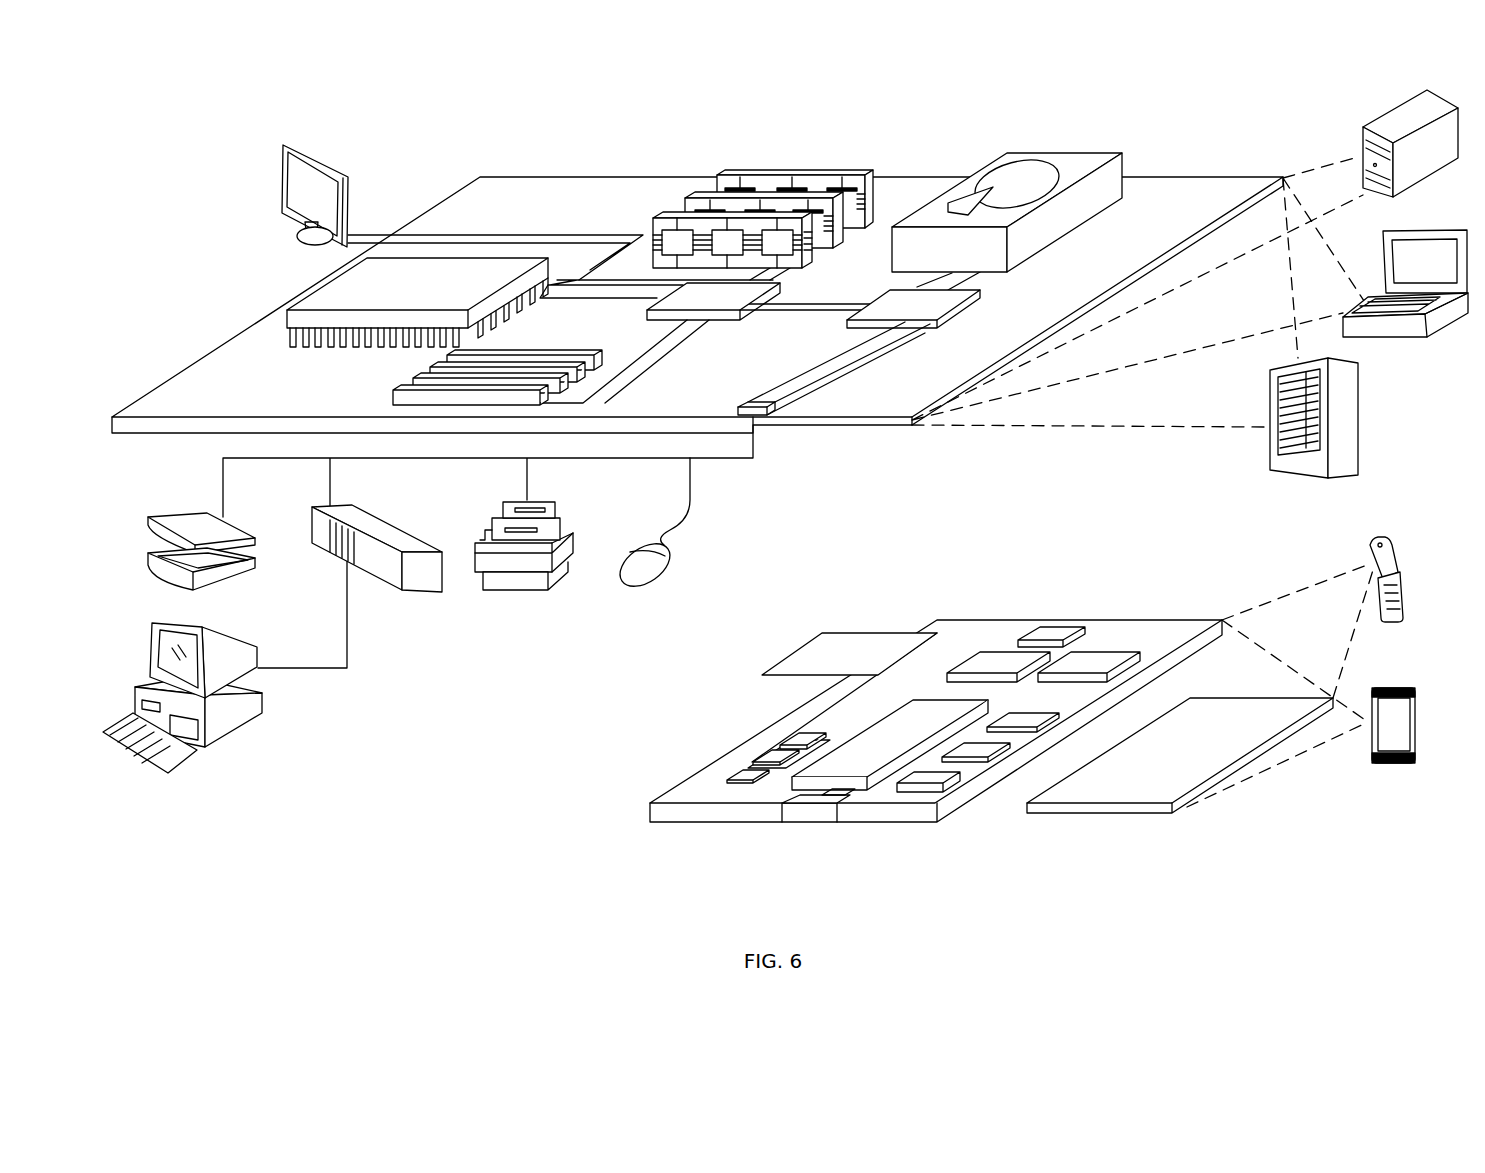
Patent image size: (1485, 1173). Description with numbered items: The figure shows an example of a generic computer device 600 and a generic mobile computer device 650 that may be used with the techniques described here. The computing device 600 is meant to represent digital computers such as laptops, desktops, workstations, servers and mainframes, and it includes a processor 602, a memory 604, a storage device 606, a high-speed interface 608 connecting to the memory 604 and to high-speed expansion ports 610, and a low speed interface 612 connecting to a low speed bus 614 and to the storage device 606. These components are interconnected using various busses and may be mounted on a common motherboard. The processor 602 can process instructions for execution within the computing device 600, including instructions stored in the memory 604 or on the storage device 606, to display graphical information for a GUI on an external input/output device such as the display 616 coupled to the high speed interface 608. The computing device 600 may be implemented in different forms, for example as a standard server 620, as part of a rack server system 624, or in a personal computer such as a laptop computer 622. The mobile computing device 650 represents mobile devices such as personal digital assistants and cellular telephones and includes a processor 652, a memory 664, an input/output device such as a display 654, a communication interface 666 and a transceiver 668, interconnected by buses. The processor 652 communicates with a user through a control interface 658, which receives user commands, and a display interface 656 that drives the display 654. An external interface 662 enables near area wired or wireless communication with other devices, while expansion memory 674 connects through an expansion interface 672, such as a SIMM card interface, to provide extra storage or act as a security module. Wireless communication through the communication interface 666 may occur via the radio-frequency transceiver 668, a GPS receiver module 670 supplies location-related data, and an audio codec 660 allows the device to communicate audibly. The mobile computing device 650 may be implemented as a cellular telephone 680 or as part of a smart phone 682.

The computing device 600 is at (430, 124).
The processor 602 is at (310, 290).
The memory 604 is at (797, 167).
The storage device 606 is at (1048, 148).
The high-speed interface 608 is at (727, 293).
The high-speed expansion ports 610 is at (418, 373).
The low speed interface 612 is at (883, 300).
The low speed bus 614 is at (758, 397).
The display 616 is at (287, 142).
The standard server 620 is at (1385, 118).
The laptop computer 622 is at (1445, 227).
The rack server system 624 is at (1358, 420).
The mobile computing device 650 is at (608, 823).
The processor 652 is at (853, 750).
The display 654 is at (1222, 717).
The display interface 656 is at (940, 778).
The control interface 658 is at (983, 752).
The audio codec 660 is at (1022, 717).
The external interface 662 is at (810, 808).
The memory 664 is at (762, 753).
The communication interface 666 is at (998, 657).
The transceiver 668 is at (1097, 658).
The GPS receiver module 670 is at (1053, 633).
The expansion interface 672 is at (917, 633).
The expansion memory 674 is at (822, 633).
The cellular telephone 680 is at (1382, 538).
The smart phone 682 is at (1383, 687).